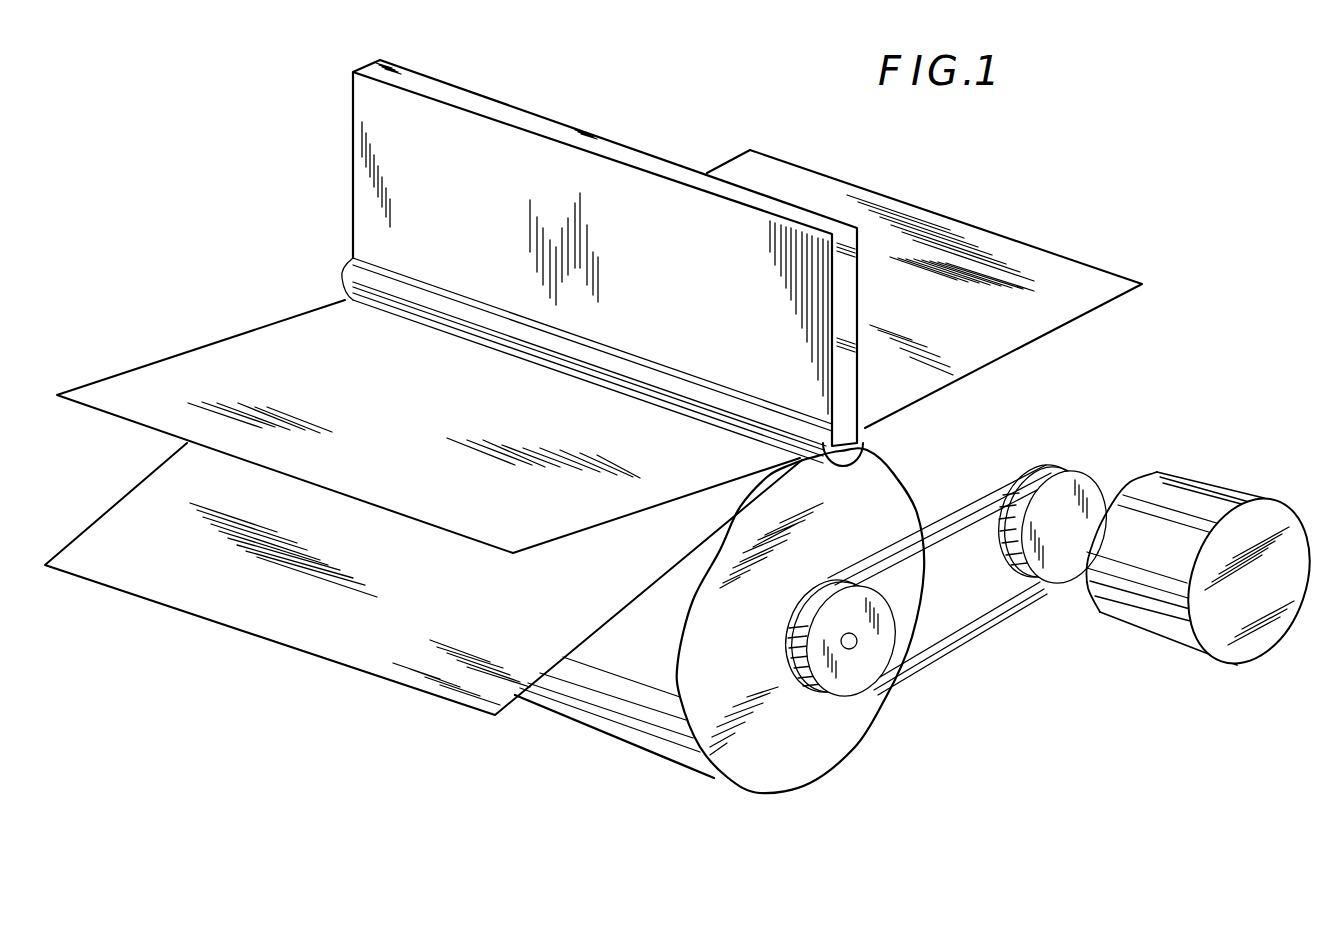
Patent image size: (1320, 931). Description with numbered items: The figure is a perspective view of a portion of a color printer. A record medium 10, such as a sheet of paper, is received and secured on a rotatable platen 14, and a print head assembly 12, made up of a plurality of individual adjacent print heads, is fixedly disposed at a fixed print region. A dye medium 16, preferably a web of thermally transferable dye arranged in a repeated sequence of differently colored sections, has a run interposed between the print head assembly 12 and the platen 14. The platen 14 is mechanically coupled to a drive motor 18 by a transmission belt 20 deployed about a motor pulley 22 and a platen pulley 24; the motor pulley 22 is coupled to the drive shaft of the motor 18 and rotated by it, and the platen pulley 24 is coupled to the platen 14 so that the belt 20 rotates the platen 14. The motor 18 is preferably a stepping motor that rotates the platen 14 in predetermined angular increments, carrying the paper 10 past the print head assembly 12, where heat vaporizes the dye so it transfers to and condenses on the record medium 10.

The record medium 10 is at (495, 706).
The print head assembly 12 is at (322, 214).
The rotatable platen 14 is at (633, 737).
The dye medium 16 is at (125, 386).
The drive motor 18 is at (1205, 500).
The transmission belt 20 is at (967, 514).
The motor pulley 22 is at (1052, 573).
The platen pulley 24 is at (851, 678).